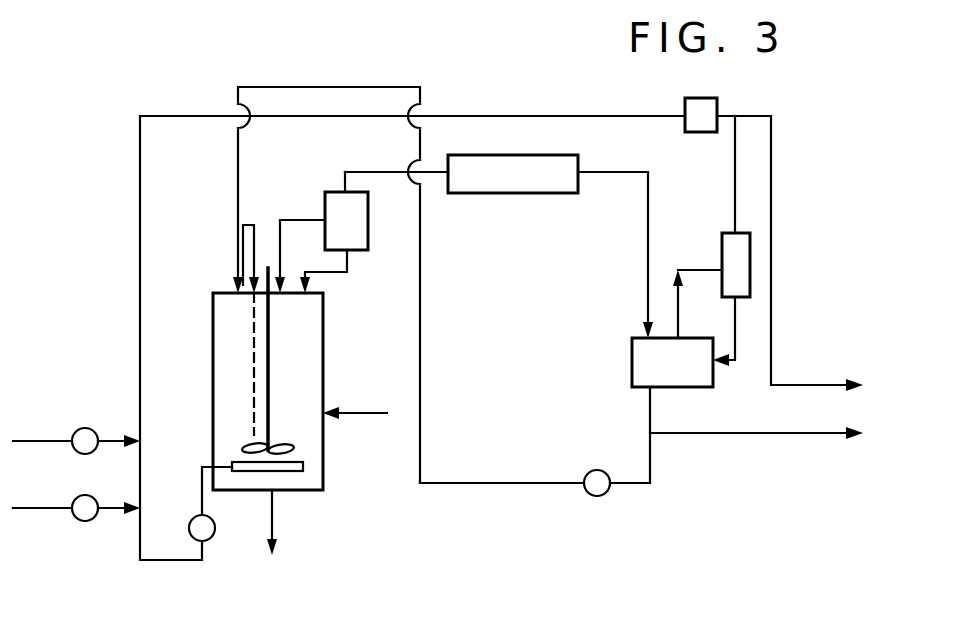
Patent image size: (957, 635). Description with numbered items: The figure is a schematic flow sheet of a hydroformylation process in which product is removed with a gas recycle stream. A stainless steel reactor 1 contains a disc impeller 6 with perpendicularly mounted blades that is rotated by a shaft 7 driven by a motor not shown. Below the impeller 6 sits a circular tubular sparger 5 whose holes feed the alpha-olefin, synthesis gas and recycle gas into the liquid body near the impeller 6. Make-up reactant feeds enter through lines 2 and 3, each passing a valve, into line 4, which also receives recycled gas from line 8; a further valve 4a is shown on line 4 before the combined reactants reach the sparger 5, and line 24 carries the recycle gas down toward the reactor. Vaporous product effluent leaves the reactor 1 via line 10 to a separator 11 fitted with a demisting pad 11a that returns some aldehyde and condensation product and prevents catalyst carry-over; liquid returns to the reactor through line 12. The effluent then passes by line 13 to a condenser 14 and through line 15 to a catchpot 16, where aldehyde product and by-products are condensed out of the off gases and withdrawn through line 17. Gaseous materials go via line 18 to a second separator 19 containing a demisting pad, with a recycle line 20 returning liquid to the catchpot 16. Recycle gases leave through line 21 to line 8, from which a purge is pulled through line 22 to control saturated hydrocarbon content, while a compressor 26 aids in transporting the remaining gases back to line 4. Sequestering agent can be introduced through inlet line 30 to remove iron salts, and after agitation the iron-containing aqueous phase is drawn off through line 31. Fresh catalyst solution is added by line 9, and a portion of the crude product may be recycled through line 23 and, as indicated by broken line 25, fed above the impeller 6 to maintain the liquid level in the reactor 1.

The reactor 1 is at (323, 390).
The line 2 is at (50, 443).
The line 3 is at (50, 510).
The line 4 is at (167, 562).
The valve 4a is at (210, 540).
The sparger 5 is at (262, 472).
The disc impeller 6 is at (292, 450).
The shaft 7 is at (270, 348).
The line 8 is at (563, 116).
The line 9 is at (241, 255).
The line 10 is at (300, 205).
The separator 11 is at (368, 232).
The demisting pad 11a is at (366, 196).
The line 12 is at (347, 260).
The line 13 is at (385, 156).
The condenser 14 is at (493, 155).
The line 15 is at (646, 200).
The catchpot 16 is at (632, 370).
The line 17 is at (707, 435).
The line 18 is at (672, 300).
The separator 19 is at (738, 262).
The recycle line 20 is at (737, 322).
The line 21 is at (735, 182).
The line 22 is at (771, 180).
The line 23 is at (640, 485).
The recycle line 24 is at (240, 158).
The broken line 25 is at (252, 377).
The compressor 26 is at (718, 100).
The inlet line 30 is at (357, 417).
The line 31 is at (275, 520).